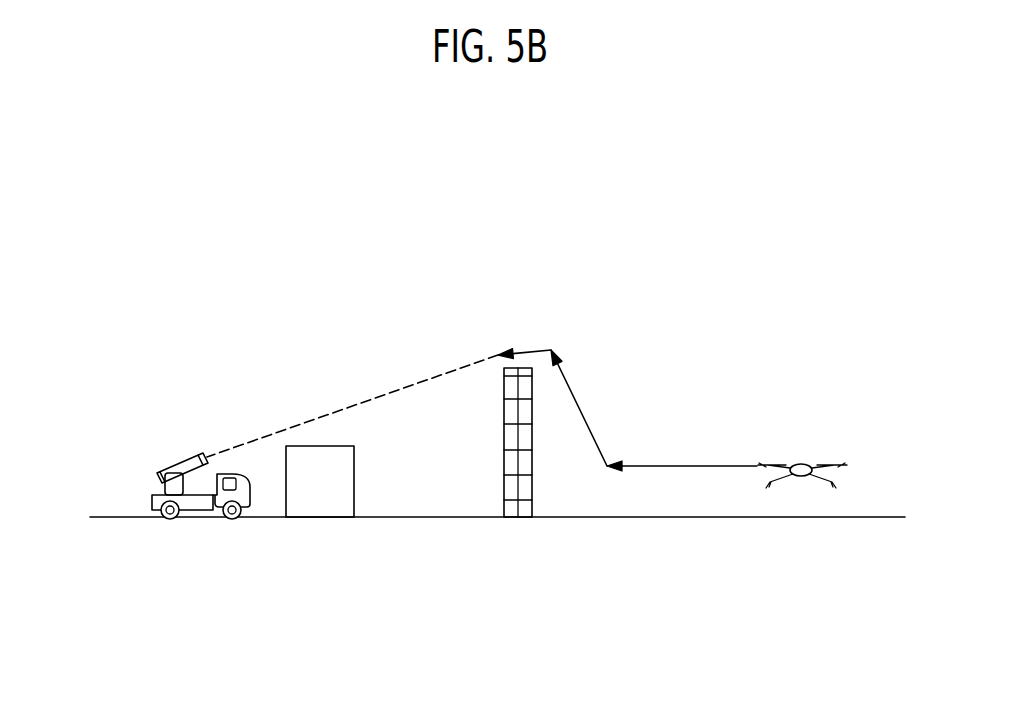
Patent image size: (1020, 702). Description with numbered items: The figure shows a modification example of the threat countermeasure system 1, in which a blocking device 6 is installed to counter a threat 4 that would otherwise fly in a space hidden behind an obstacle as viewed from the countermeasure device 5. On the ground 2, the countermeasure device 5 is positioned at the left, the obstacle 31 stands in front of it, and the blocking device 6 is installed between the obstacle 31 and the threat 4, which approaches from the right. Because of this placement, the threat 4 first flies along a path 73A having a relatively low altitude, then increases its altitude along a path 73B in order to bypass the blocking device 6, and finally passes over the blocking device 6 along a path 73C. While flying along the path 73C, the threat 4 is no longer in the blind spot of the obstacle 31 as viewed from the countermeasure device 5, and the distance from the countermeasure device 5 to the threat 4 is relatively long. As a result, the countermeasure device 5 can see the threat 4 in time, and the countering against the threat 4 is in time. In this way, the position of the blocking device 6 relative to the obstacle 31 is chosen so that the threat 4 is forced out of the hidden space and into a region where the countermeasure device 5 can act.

The threat countermeasure system 1 is at (743, 183).
The ground 2 is at (737, 518).
The threat 4 is at (803, 463).
The countermeasure device 5 is at (208, 508).
The blocking device 6 is at (527, 512).
The obstacle 31 is at (318, 512).
The path 73A is at (672, 464).
The path 73B is at (568, 383).
The path 73C is at (538, 348).